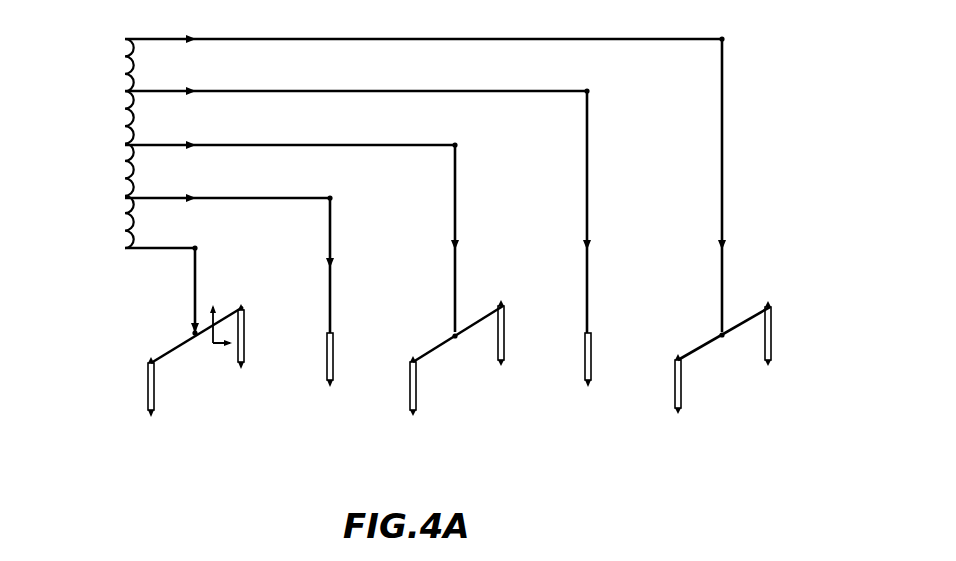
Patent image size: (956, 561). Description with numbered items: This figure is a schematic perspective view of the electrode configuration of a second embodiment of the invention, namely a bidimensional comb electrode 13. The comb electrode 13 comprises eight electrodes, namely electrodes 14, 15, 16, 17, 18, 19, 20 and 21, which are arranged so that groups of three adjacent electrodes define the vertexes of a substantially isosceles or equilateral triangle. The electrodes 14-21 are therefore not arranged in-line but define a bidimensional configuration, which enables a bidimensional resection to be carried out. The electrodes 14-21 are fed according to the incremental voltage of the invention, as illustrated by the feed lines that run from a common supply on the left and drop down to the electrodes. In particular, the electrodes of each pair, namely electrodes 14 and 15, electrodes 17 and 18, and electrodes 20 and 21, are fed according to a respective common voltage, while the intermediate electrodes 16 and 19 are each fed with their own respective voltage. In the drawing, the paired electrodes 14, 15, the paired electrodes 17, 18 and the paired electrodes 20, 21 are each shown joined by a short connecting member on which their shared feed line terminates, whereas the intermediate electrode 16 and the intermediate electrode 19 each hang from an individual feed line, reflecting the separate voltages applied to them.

The bidimensional comb electrode 13 is at (124, 373).
The electrode 14 is at (147, 399).
The electrode 15 is at (246, 342).
The intermediate electrode 16 is at (334, 355).
The electrode 17 is at (409, 400).
The electrode 18 is at (506, 338).
The intermediate electrode 19 is at (594, 365).
The electrode 20 is at (674, 400).
The electrode 21 is at (774, 335).